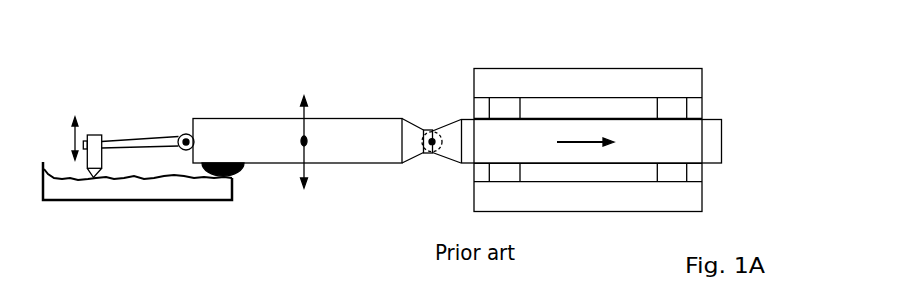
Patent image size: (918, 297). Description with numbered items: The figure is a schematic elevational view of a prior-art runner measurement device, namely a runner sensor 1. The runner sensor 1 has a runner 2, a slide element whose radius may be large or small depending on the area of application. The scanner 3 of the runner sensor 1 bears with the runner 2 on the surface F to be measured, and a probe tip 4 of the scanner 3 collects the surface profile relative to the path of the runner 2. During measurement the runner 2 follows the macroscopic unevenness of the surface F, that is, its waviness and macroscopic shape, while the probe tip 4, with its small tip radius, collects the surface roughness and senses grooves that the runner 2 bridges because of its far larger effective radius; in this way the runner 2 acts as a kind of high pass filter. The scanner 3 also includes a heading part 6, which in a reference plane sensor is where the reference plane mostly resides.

The runner sensor 1 is at (430, 30).
The runner 2 is at (236, 176).
The scanner 3 is at (116, 157).
The probe tip 4 is at (99, 177).
The heading part 6 is at (734, 143).
The surface F is at (62, 176).